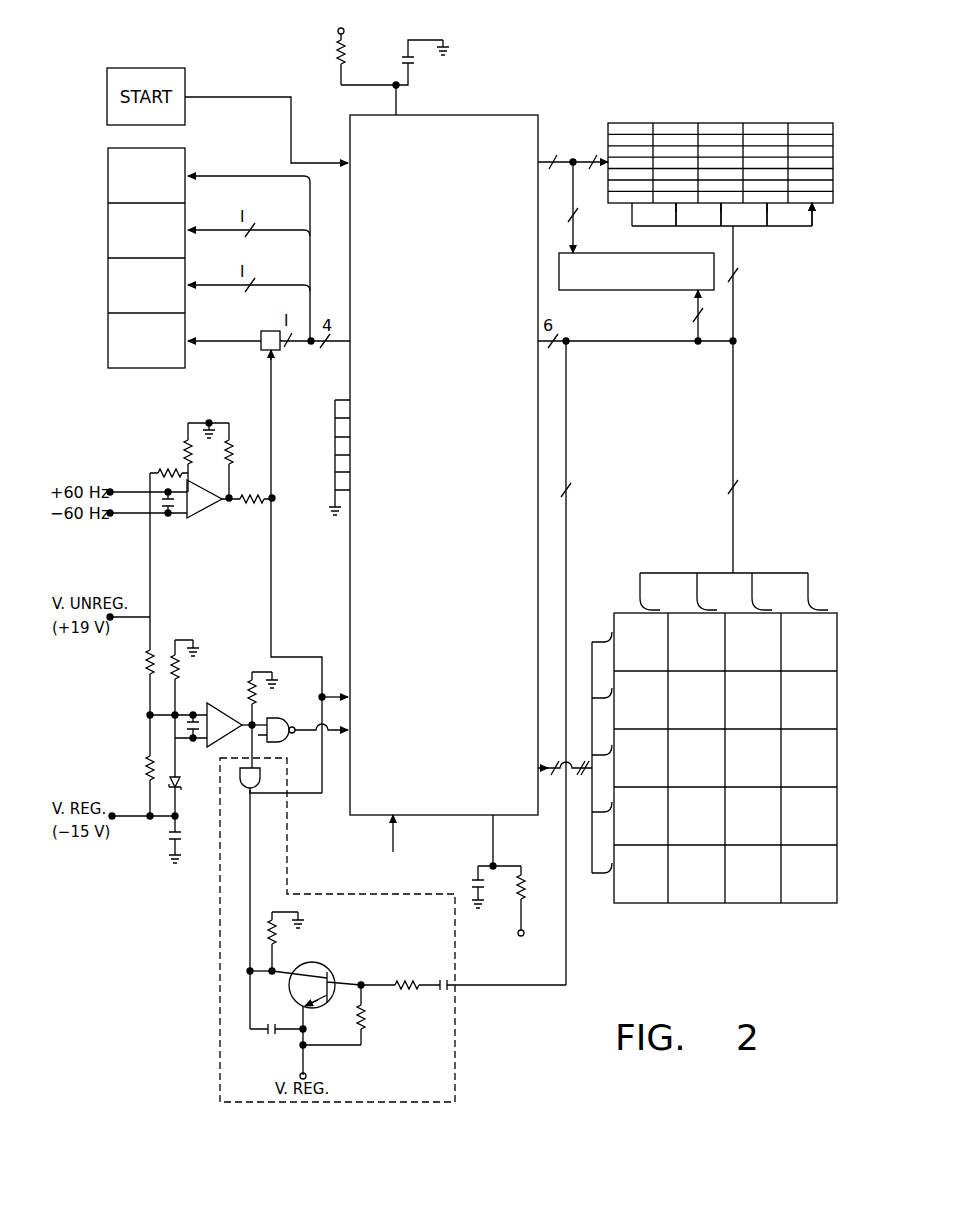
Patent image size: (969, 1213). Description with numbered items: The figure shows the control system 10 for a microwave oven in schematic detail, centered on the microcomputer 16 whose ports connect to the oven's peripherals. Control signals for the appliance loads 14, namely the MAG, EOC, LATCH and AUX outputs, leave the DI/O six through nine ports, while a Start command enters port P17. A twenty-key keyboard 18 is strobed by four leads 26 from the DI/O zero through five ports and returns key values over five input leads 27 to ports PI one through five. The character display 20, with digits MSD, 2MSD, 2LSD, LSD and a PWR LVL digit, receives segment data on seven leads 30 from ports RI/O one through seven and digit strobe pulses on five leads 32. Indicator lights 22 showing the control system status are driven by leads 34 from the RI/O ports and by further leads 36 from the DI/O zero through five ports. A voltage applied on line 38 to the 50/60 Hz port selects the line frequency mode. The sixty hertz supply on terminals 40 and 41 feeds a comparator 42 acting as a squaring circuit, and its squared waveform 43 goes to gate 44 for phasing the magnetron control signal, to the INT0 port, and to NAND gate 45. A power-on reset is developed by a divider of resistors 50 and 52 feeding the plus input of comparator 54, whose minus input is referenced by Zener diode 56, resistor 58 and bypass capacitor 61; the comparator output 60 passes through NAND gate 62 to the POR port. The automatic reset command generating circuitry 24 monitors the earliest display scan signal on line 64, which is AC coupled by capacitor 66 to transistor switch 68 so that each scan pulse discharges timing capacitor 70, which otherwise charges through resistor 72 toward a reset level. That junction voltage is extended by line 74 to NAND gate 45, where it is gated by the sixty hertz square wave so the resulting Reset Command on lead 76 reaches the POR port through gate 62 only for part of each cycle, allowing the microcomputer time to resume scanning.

The control system 10 is at (516, 1006).
The appliance loads 14 is at (108, 184).
The microcomputer 16 is at (512, 115).
The keyboard 18 is at (707, 908).
The character display 20 is at (693, 94).
The indicator lights 22 is at (608, 253).
The automatic reset command generating circuitry 24 is at (220, 914).
The leads 26 is at (733, 545).
The input leads 27 is at (575, 752).
The leads 30 is at (583, 176).
The leads 32 is at (735, 254).
The indicator light bus 34 is at (573, 214).
The leads 36 is at (703, 312).
The line 38 is at (393, 838).
The terminal 40 is at (150, 487).
The terminal 41 is at (136, 516).
The comparator 42 is at (204, 509).
The squared 60 Hz waveform 43 is at (272, 546).
The gate 44 is at (276, 351).
The NAND gate 45 is at (242, 784).
The resistor 50 is at (147, 664).
The resistor 52 is at (147, 771).
The comparator 54 is at (228, 703).
The Zener diode 56 is at (177, 785).
The resistor 58 is at (181, 666).
The output 60 is at (255, 723).
The high frequency bypass capacitor 61 is at (170, 836).
The NAND gate 62 is at (281, 741).
The line 64 is at (566, 930).
The capacitor 66 is at (445, 991).
The transistor switch 68 is at (325, 975).
The timing capacitor 70 is at (268, 1035).
The resistor 72 is at (275, 936).
The line 74 is at (250, 857).
The lead 76 is at (240, 746).